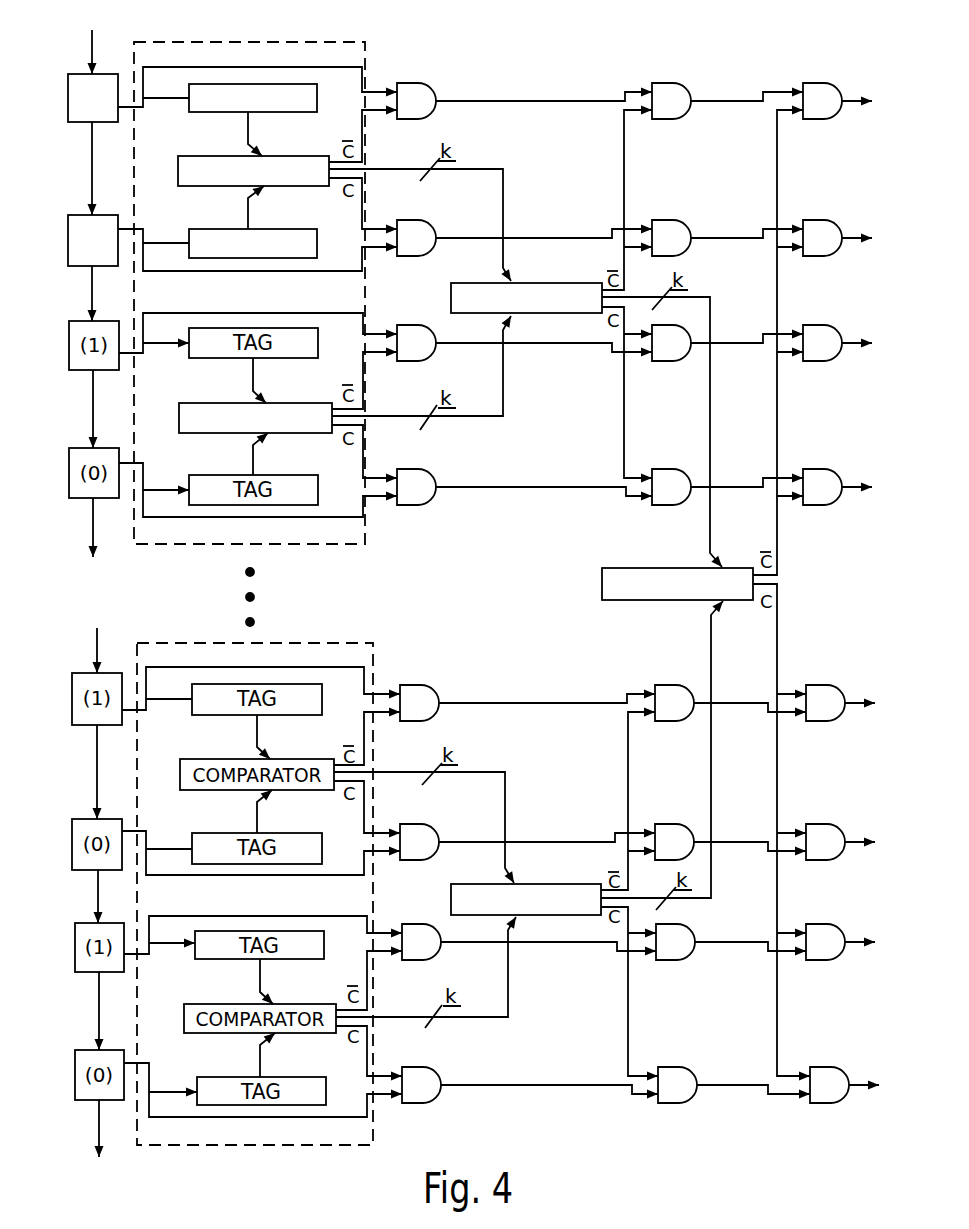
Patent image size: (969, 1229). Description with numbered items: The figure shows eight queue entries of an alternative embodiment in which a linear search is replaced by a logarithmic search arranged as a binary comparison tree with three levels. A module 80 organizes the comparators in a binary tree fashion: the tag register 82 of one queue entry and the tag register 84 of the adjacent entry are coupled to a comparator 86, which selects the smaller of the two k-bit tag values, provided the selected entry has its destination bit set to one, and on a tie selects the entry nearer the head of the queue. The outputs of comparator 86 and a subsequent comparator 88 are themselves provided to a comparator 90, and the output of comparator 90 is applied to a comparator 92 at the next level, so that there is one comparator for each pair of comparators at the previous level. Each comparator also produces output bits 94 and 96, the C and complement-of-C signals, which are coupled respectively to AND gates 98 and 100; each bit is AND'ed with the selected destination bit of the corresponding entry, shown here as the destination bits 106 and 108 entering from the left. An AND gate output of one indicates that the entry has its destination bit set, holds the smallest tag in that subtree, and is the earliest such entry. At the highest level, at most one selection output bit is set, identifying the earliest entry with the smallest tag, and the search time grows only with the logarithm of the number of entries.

The module 80 is at (360, 18).
The tag register 82 is at (317, 99).
The tag register 84 is at (310, 229).
The comparator 86 is at (318, 156).
The comparator 88 is at (315, 403).
The comparator 90 is at (545, 283).
The comparator 92 is at (655, 568).
The output bit 94 is at (372, 117).
The output bit 96 is at (364, 227).
The AND gate 98 is at (425, 84).
The AND gate 100 is at (426, 221).
The destination bit 106 is at (78, 74).
The destination bit 108 is at (78, 215).